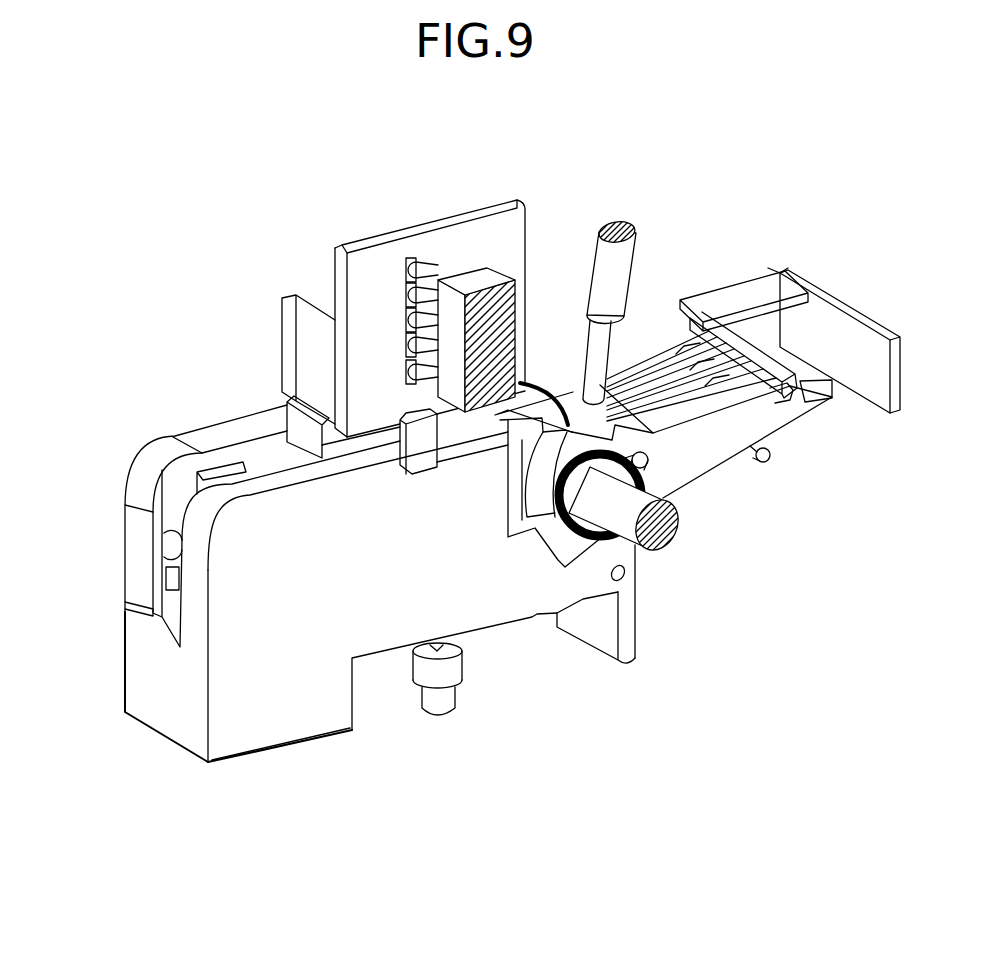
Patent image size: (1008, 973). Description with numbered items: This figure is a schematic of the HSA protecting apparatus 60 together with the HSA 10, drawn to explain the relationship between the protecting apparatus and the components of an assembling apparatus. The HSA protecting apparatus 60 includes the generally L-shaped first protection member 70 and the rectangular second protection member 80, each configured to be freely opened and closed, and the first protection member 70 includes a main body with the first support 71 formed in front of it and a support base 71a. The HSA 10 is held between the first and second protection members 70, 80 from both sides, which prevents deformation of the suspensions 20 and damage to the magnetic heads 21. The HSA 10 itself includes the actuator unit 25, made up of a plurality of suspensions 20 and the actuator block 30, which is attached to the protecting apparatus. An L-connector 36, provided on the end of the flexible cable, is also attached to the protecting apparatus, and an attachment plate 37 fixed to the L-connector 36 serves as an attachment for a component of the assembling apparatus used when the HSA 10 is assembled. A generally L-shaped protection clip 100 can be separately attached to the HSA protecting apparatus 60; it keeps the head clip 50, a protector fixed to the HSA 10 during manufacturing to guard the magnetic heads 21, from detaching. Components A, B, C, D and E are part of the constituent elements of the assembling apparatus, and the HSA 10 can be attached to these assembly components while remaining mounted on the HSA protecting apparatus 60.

The HSA protecting apparatus 60 is at (203, 287).
The HSA 10 is at (750, 240).
The first protection member 70 is at (240, 597).
The first support 71 is at (593, 638).
The support base 71a is at (283, 735).
The second protection member 80 is at (146, 467).
The L-connector 36 is at (305, 330).
The attachment plate 37 is at (512, 225).
The protection clip 100 is at (843, 328).
The suspension 20 is at (780, 410).
The magnetic head 21 is at (827, 385).
The head clip 50 is at (820, 383).
The actuator unit 25 is at (693, 458).
The actuator block 30 is at (585, 536).
The assembly component A is at (467, 272).
The assembly component B is at (618, 256).
The assembly component C is at (763, 457).
The assembly component D is at (680, 527).
The assembly component E is at (438, 708).